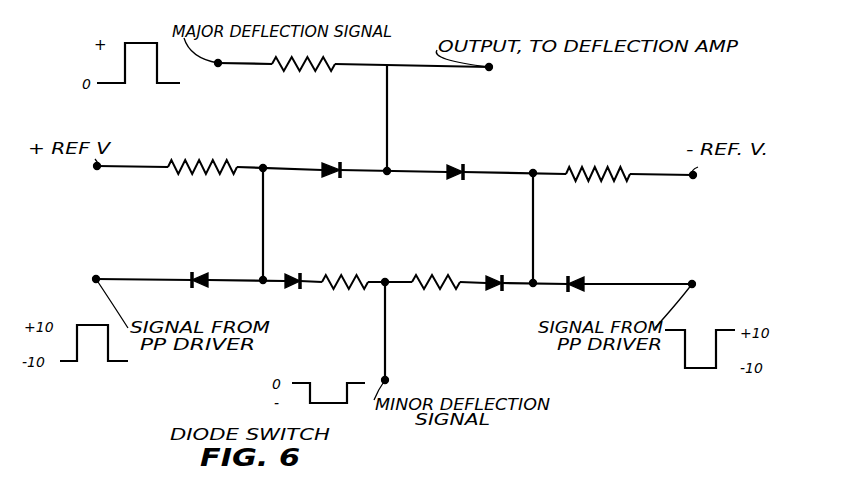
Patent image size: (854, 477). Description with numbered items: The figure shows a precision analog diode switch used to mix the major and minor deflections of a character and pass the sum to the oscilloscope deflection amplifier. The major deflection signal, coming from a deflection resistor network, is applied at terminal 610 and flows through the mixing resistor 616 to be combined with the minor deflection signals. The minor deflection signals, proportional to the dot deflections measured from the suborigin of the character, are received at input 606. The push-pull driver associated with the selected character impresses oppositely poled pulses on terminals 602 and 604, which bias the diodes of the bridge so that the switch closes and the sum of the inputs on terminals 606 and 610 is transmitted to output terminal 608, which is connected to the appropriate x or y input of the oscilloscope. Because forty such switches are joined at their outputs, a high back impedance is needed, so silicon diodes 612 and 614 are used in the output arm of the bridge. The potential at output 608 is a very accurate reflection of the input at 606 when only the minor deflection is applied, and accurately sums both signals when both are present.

The terminal 610 is at (218, 63).
The mixing resistor 616 is at (303, 71).
The output terminal 608 is at (500, 82).
The silicon diode 612 is at (332, 162).
The silicon diode 614 is at (455, 164).
The terminal 602 is at (96, 279).
The terminal 604 is at (692, 284).
The input 606 is at (385, 380).